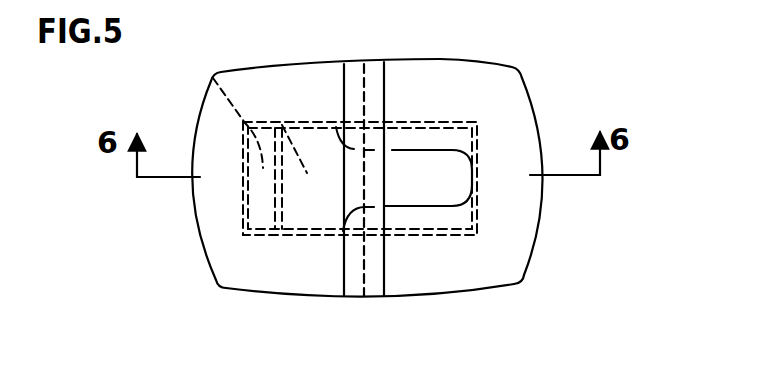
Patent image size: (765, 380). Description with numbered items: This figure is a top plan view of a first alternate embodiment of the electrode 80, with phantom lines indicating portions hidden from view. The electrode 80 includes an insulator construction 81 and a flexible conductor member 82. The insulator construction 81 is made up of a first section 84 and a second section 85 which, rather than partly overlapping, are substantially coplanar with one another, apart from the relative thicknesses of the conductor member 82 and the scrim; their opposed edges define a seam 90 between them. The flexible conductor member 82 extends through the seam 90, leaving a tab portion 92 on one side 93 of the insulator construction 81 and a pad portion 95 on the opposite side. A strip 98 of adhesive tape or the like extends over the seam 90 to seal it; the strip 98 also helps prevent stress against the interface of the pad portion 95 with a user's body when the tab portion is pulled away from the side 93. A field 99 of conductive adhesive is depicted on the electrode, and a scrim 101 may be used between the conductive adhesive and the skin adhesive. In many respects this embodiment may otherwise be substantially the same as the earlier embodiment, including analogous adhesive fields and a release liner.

The electrode 80 is at (420, 42).
The insulator construction 81 is at (437, 306).
The conductor member 82 is at (403, 165).
The first section 84 is at (270, 66).
The second section 85 is at (517, 67).
The seam 90 is at (367, 93).
The tab portion 92 is at (440, 190).
The side 93 is at (461, 70).
The pad portion 95 is at (287, 122).
The strip 98 is at (355, 285).
The field of conductive adhesive 99 is at (480, 148).
The scrim 101 is at (213, 78).